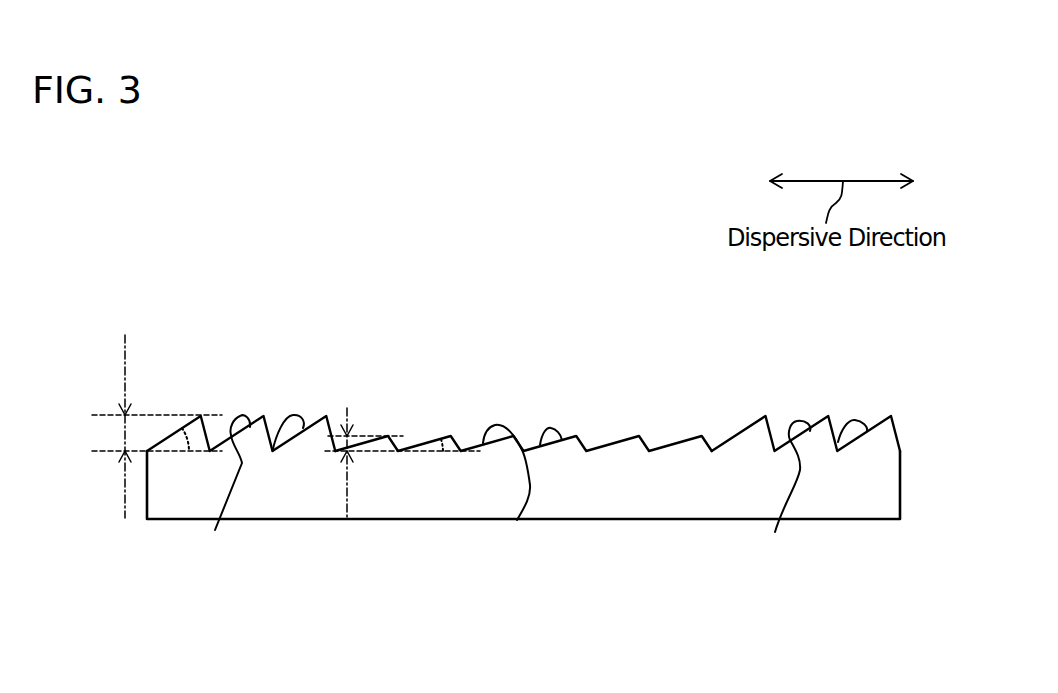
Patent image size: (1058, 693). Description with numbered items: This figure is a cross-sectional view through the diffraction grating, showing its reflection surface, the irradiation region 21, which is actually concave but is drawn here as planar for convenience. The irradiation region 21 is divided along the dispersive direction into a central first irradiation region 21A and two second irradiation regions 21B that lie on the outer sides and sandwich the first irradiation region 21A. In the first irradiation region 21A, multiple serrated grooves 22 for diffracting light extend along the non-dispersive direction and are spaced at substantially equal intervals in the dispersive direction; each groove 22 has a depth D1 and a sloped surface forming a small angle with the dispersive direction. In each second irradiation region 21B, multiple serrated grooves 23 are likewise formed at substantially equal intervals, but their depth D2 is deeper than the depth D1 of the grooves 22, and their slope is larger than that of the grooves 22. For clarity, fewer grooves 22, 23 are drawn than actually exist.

The irradiation region 21 is at (603, 444).
The first irradiation region 21A is at (710, 413).
The second irradiation region 21B is at (335, 405).
The grooves 22 is at (517, 520).
The grooves 23 is at (215, 530).
The depth of grooves 22 D1 is at (358, 438).
The depth of grooves 23 D2 is at (123, 430).